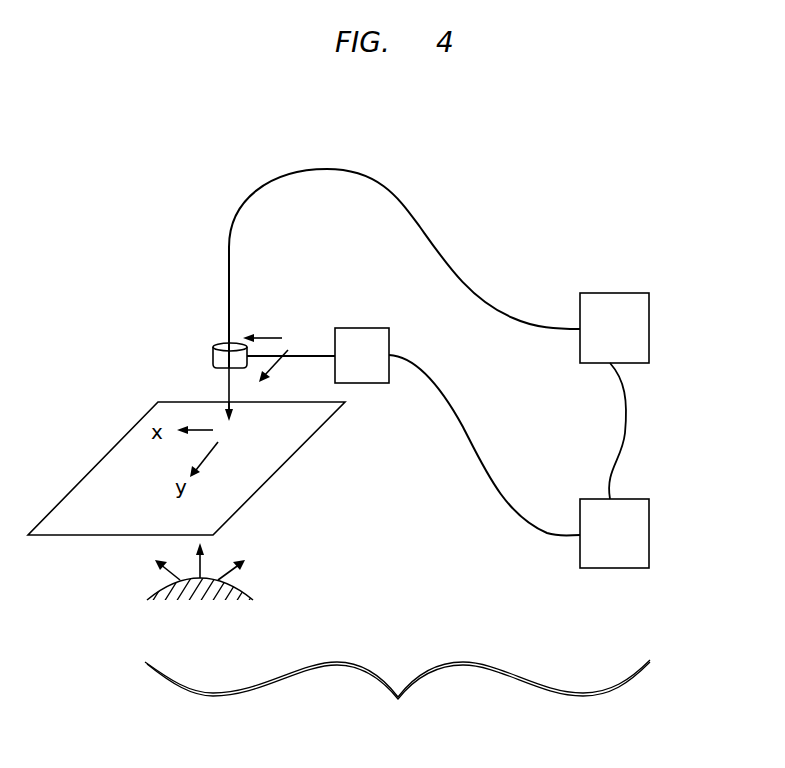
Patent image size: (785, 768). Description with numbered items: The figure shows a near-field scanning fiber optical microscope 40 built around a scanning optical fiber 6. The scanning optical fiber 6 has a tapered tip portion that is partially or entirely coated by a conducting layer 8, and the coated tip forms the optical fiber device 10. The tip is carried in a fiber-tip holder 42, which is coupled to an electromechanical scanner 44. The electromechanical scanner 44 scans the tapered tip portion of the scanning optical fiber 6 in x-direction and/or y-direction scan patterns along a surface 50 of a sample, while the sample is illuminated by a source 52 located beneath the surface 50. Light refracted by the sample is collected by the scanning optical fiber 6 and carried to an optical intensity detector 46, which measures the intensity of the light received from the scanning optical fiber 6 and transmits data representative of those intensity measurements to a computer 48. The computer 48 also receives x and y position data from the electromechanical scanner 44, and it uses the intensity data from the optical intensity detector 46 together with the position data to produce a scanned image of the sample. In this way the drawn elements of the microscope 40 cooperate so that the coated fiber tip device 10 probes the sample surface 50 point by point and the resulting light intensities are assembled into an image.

The scanning optical fiber 6 is at (232, 232).
The fiber-tip holder 42 is at (215, 348).
The optical fiber device 10 is at (220, 390).
The conducting layer 8 is at (233, 423).
The electromechanical scanner 44 is at (374, 368).
The optical intensity detector 46 is at (626, 339).
The computer 48 is at (626, 546).
The surface of a sample 50 is at (109, 520).
The source 52 is at (250, 598).
The near-field scanning fiber optical microscope 40 is at (397, 699).